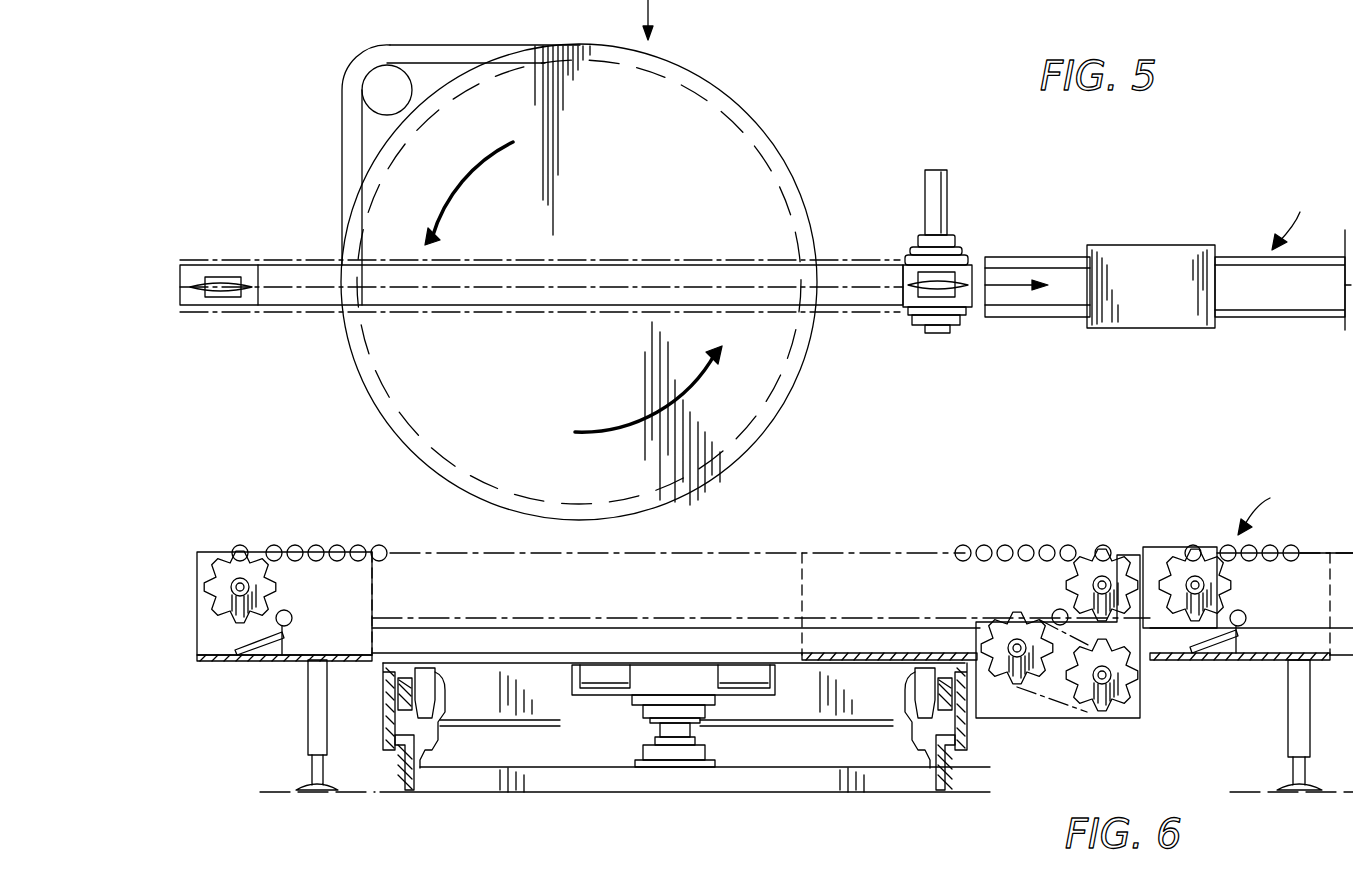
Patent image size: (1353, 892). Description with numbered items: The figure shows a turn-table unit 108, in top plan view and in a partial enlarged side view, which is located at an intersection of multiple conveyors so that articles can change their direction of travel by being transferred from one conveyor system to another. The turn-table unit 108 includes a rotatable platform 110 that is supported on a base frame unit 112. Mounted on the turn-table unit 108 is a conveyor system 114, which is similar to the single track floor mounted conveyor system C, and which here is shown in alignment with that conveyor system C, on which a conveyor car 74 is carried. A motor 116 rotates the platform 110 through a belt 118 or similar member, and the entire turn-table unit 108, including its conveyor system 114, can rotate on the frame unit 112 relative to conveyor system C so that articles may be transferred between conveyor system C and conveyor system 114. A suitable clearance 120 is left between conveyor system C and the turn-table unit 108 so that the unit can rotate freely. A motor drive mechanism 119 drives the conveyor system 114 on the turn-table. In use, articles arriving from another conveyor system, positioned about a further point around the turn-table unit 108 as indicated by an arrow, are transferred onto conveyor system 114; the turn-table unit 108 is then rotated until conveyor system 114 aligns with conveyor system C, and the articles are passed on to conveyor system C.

In FIG. 5, the conveyor car 74 is at (1152, 328).
In FIG. 5, the turn-table unit 108 is at (772, 88).
In FIG. 6, the turn-table unit 108 is at (228, 535).
In FIG. 5, the rotatable platform 110 is at (766, 368).
In FIG. 6, the rotatable platform 110 is at (752, 565).
In FIG. 6, the base frame unit 112 is at (390, 756).
In FIG. 5, the conveyor system 114 is at (803, 262).
In FIG. 6, the conveyor system 114 is at (886, 553).
In FIG. 5, the motor 116 is at (370, 83).
In FIG. 5, the belt 118 is at (448, 44).
In FIG. 5, the motor drive mechanism 119 is at (970, 242).
In FIG. 6, the motor drive mechanism 119 is at (1131, 721).
In FIG. 5, the clearance 120 is at (983, 265).
In FIG. 6, the clearance 120 is at (1138, 542).